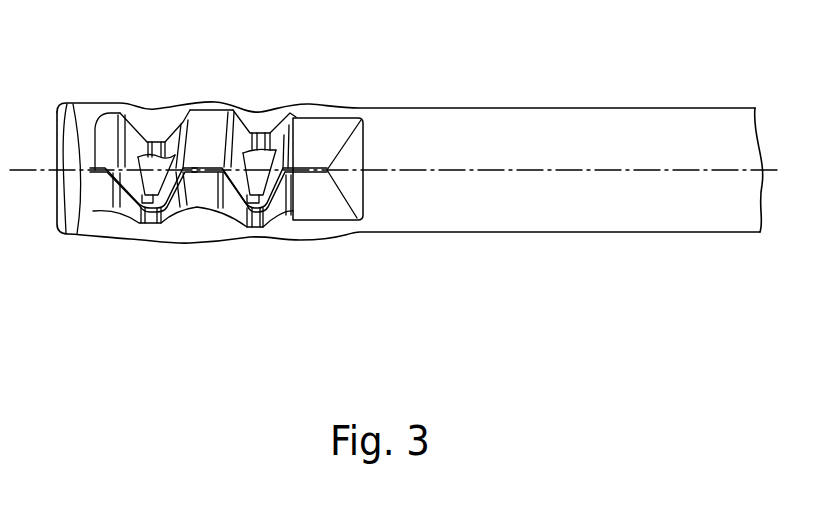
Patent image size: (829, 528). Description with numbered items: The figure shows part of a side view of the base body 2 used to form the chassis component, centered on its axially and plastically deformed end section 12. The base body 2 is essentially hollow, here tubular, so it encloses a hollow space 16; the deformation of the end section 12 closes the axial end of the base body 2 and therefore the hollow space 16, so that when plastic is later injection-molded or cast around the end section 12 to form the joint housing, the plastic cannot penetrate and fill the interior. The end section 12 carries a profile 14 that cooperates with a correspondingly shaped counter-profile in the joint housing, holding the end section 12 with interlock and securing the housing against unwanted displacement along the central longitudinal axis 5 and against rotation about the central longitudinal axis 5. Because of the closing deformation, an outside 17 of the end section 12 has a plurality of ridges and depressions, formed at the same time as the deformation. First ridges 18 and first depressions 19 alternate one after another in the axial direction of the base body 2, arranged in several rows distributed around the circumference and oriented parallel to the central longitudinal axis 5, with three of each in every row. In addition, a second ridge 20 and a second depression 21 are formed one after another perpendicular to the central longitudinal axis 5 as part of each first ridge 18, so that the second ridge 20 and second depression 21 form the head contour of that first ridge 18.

The base body 2 is at (723, 135).
The central longitudinal axis 5 is at (585, 170).
The end section 12 is at (201, 254).
The profile 14 is at (267, 243).
The hollow space 16 is at (768, 183).
The outside 17 is at (97, 186).
The first ridges 18 is at (297, 131).
The first depressions 19 is at (210, 131).
The second ridge 20 is at (266, 130).
The second depression 21 is at (260, 177).